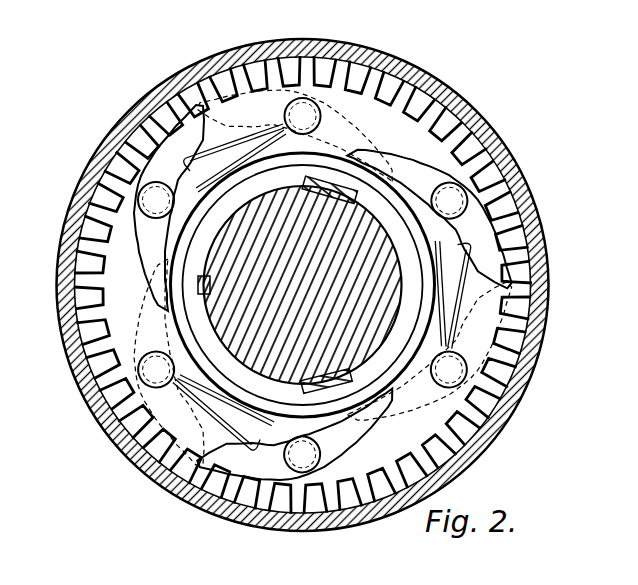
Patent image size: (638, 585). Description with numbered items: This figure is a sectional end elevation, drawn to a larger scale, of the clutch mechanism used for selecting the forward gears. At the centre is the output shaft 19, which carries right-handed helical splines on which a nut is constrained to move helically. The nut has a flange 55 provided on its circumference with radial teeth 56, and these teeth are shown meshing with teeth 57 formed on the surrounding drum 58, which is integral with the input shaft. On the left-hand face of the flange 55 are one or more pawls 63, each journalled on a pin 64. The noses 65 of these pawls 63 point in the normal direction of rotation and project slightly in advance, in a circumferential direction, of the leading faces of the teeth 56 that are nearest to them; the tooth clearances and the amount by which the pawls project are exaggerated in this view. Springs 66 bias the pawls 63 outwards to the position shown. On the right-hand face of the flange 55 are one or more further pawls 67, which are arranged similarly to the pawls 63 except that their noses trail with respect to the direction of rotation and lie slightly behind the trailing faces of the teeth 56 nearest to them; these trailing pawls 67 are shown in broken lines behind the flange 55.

The shaft 19 is at (382, 318).
The flange 55 is at (427, 148).
The radial teeth 56 is at (423, 77).
The teeth 57 is at (453, 123).
The drum 58 is at (392, 62).
The pawls 63 is at (158, 153).
The pins 64 is at (156, 200).
The noses 65 is at (195, 132).
The springs 66 is at (240, 130).
The pawls 67 is at (282, 47).